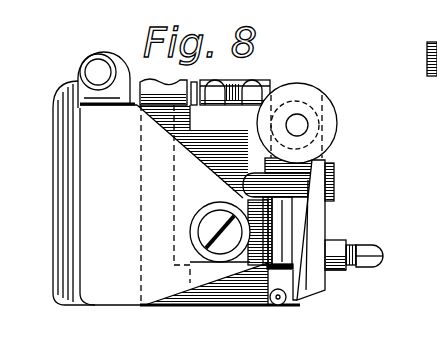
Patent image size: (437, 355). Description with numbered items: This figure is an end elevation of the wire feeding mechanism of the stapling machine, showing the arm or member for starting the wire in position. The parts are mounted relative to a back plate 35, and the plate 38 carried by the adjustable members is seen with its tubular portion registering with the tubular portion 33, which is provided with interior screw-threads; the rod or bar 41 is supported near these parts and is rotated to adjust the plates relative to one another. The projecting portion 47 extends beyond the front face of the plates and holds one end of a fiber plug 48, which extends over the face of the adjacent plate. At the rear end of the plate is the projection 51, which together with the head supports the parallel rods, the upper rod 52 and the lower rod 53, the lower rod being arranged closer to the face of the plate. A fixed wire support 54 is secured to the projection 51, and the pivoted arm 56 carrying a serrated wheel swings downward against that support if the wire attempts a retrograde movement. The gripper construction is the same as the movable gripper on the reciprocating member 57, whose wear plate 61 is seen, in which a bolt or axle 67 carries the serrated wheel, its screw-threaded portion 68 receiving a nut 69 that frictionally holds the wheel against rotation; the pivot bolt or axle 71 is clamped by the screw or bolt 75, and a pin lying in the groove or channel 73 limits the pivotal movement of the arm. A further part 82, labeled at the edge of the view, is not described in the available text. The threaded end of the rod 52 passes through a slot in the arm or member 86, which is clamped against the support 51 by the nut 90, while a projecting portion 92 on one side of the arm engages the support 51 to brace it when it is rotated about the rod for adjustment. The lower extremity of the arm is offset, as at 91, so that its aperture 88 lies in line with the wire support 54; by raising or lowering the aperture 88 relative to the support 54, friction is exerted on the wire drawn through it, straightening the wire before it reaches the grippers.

The tubular portion 33 is at (118, 58).
The rod or bar 41 is at (95, 68).
The plate 38 is at (58, 170).
The back plate 35 is at (175, 92).
The screw or bolt 75 is at (235, 93).
The projection 51 is at (240, 137).
The rod 52 is at (297, 125).
The nut 90 is at (334, 130).
The projecting portion 92 is at (243, 183).
The offset 91 is at (281, 264).
The arm or member 86 is at (298, 232).
The bolt or axle 71 is at (334, 190).
The arm 56 is at (348, 250).
The screw-threaded portion 68 is at (357, 254).
The bolt or axle 67 is at (383, 258).
The nut 69 is at (343, 270).
The fixed wire support 54 is at (300, 297).
The aperture 88 is at (279, 305).
The plug 48 is at (233, 243).
The projecting portion 47 is at (167, 260).
The groove or channel 73 is at (430, 49).
The member 57 is at (427, 16).
The member 82 is at (428, 76).
The wear plate 61 is at (428, 101).
The rod 53 is at (427, 122).